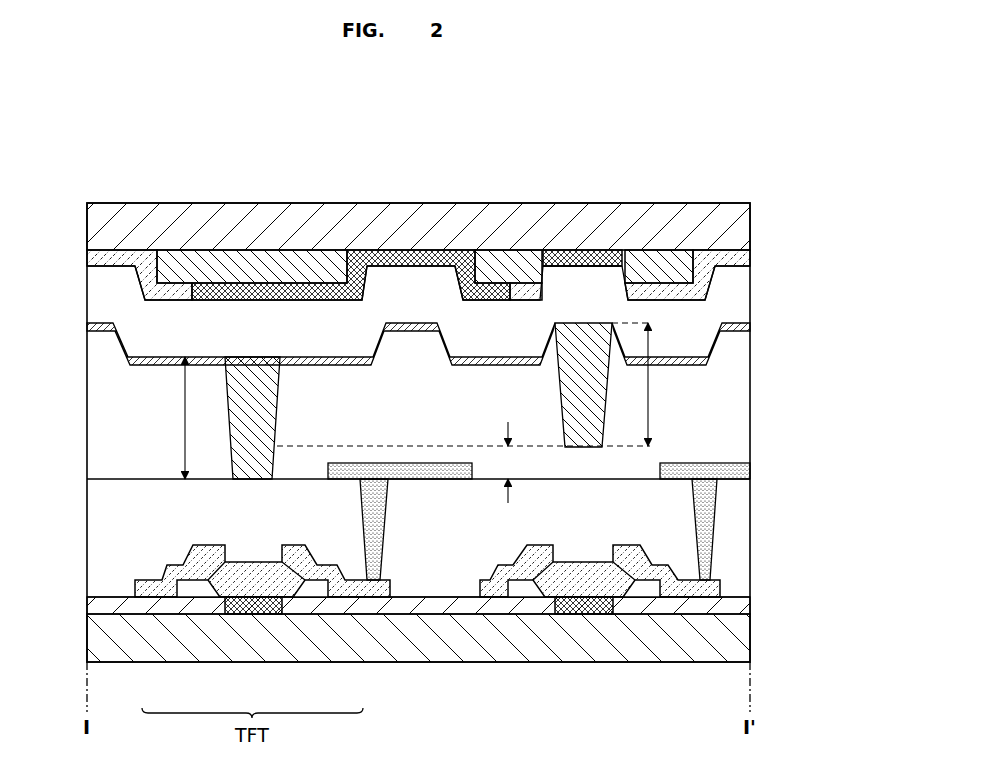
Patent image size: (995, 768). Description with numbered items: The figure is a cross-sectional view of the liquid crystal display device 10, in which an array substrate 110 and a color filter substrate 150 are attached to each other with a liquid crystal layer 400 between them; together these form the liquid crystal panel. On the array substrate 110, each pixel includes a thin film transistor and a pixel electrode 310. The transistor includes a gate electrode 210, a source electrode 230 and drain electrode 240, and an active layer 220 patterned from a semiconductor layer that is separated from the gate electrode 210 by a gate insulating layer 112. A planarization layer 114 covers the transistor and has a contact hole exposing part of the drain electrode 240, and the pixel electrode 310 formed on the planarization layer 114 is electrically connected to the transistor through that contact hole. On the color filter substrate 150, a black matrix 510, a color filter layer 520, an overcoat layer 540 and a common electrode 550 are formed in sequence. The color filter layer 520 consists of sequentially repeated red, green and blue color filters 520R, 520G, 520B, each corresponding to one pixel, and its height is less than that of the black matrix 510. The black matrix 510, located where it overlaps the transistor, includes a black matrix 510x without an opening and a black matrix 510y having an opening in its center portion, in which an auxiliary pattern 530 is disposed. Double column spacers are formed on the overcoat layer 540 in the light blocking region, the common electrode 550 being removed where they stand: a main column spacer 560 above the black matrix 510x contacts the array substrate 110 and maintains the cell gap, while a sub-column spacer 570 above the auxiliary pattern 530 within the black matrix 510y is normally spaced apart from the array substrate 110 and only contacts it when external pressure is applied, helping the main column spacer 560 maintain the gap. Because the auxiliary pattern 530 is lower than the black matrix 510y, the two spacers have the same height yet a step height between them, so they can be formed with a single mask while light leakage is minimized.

The liquid crystal display device 10 is at (696, 124).
The array substrate 110 is at (87, 640).
The gate insulating layer 112 is at (87, 607).
The planarization layer 114 is at (87, 537).
The color filter substrate 150 is at (87, 229).
The gate electrode 210 is at (250, 612).
The active layer 220 is at (192, 590).
The source electrode 230 is at (147, 590).
The drain electrode 240 is at (352, 590).
The pixel electrode 310 is at (408, 463).
The liquid crystal layer 400 is at (87, 425).
The black matrix 510 is at (425, 188).
The black matrix not having an opening 510x is at (300, 250).
The black matrix having an opening 510y is at (506, 250).
The color filter layer 520 is at (87, 260).
The green color filter 520G is at (117, 260).
The blue color filter 520B is at (374, 258).
The red color filter 520R is at (711, 258).
The auxiliary pattern 530 is at (602, 258).
The overcoat layer 540 is at (87, 299).
The common electrode 550 is at (87, 329).
The main column spacer 560 is at (278, 405).
The sub-column spacer 570 is at (562, 390).